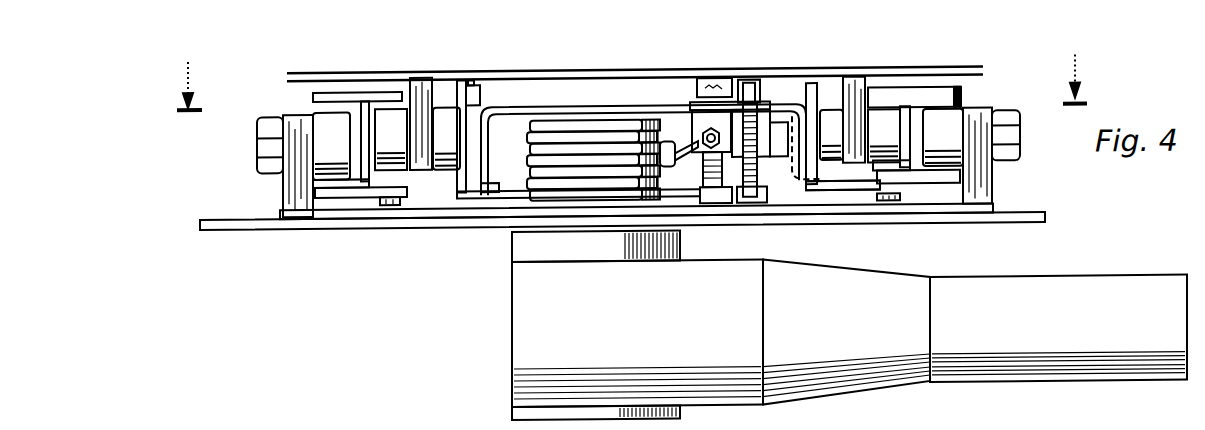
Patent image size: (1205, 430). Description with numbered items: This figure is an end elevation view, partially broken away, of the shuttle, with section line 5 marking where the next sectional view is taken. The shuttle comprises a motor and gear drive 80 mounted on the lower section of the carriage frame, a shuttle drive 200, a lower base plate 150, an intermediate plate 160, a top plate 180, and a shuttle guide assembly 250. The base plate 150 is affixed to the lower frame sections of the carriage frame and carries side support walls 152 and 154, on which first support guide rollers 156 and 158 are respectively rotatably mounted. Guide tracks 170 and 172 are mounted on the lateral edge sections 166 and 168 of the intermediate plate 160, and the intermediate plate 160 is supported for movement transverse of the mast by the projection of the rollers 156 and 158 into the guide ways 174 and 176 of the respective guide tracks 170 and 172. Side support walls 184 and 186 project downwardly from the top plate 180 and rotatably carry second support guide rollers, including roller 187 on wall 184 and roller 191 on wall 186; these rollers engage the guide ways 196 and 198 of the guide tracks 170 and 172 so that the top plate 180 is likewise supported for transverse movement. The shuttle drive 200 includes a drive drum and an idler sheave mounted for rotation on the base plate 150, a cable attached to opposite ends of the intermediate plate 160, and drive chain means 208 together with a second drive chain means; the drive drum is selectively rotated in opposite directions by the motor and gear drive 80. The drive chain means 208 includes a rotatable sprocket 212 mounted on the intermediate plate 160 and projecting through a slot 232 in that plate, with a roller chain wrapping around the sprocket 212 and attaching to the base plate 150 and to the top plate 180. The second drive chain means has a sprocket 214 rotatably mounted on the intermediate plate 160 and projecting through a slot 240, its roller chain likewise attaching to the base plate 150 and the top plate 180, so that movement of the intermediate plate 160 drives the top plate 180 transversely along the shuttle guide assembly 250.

The section line 5- 5 is at (632, 70).
The motor and gear drive 80 is at (1032, 290).
The lower base plate 150 is at (363, 235).
The side support wall 152 is at (979, 197).
The side support wall 154 is at (288, 189).
The first support guide roller 156 is at (947, 144).
The first support guide roller 158 is at (334, 165).
The intermediate plate 160 is at (280, 104).
The lateral edge section 166 is at (872, 196).
The lateral edge section 168 is at (444, 224).
The guide track 170 is at (942, 105).
The guide track 172 is at (382, 99).
The guide way 174 is at (921, 124).
The guide way 176 is at (326, 119).
The top plate 180 is at (410, 69).
The side support wall 184 is at (856, 101).
The side support wall 186 is at (429, 92).
The second support guide roller 187 is at (887, 118).
The second support guide roller 191 is at (403, 182).
The guide way 196 is at (897, 203).
The guide way 198 is at (384, 225).
The shuttle drive 200 is at (526, 197).
The drive chain means 208 is at (736, 79).
The sprocket 212 is at (704, 192).
The sprocket 214 is at (757, 180).
The slot 232 is at (693, 102).
The slot 240 is at (823, 154).
The shuttle guide assembly 250 is at (250, 139).